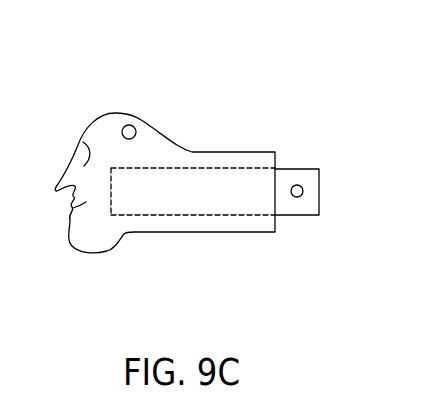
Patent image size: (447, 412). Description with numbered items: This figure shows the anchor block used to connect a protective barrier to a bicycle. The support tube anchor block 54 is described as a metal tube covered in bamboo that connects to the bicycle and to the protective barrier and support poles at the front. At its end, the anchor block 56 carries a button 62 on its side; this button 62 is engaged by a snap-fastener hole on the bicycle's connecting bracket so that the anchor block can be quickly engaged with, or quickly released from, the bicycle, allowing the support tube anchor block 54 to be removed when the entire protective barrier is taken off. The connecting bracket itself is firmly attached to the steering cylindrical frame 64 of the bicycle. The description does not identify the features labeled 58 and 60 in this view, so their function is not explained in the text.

The support tube anchor block 54 is at (196, 133).
The anchor block 56 is at (297, 168).
The body portion 58 is at (213, 232).
The patient head profile 60 is at (77, 150).
The button 62 is at (303, 193).
The steering cylindrical frame 64 is at (130, 125).